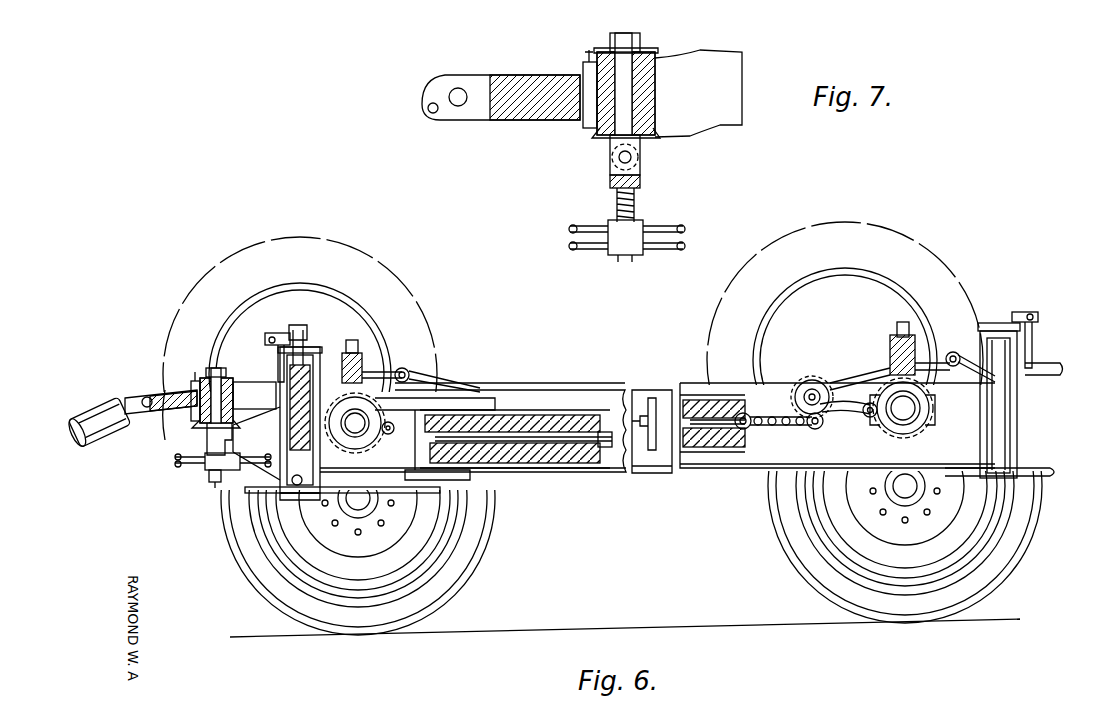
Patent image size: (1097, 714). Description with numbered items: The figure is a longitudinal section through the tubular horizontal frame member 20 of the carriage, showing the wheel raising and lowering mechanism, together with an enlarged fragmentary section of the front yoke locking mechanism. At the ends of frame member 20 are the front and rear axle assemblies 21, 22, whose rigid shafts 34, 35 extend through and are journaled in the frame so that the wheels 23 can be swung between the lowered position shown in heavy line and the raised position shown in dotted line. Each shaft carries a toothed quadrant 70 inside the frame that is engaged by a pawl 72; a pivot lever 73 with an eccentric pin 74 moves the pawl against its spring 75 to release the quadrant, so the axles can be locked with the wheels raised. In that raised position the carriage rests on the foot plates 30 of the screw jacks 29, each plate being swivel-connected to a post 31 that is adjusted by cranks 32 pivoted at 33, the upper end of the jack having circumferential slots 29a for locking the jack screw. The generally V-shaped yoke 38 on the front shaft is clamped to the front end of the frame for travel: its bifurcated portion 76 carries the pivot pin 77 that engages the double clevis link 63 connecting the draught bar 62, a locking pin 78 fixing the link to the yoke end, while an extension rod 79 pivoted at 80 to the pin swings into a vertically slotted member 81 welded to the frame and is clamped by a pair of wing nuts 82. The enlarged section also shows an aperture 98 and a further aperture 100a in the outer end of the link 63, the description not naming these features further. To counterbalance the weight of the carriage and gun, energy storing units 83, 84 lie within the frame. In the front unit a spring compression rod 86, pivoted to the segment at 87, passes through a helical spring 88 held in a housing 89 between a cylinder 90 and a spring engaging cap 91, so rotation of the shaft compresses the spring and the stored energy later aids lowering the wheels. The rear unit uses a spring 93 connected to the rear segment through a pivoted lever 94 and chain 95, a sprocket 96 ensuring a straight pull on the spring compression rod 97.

In FIG. 6, the tubular horizontal frame member 20 is at (248, 470).
In FIG. 6, the front axle assembly 21 is at (357, 440).
In FIG. 6, the rear axle assembly 22 is at (921, 428).
In FIG. 6, the wheels 23 is at (478, 554).
In FIG. 6, the screw jack 29 is at (280, 428).
In FIG. 6, the circumferential slots 29a is at (982, 322).
In FIG. 6, the ground engaging foot plate 30 is at (246, 491).
In FIG. 6, the post 31 is at (300, 509).
In FIG. 6, the cranks 32 is at (278, 360).
In FIG. 6, the crank pivot 33 is at (278, 333).
In FIG. 6, the front axle shaft 34 is at (400, 402).
In FIG. 6, the rear axle shaft 35 is at (922, 408).
In FIG. 7, the yoke 38 is at (716, 120).
In FIG. 6, the yoke 38 is at (259, 380).
In FIG. 6, the draught bar 62 is at (92, 410).
In FIG. 7, the double clevis link 63 is at (560, 75).
In FIG. 6, the double clevis link 63 is at (160, 408).
In FIG. 6, the toothed quadrant 70 is at (350, 451).
In FIG. 6, the pawl 72 is at (375, 370).
In FIG. 6, the pivot lever 73 is at (405, 368).
In FIG. 6, the eccentric pin 74 is at (345, 365).
In FIG. 6, the spring 75 is at (354, 348).
In FIG. 7, the bifurcated portion 76 is at (603, 135).
In FIG. 6, the bifurcated portion 76 is at (204, 378).
In FIG. 7, the link-connecting pivot pin 77 is at (628, 60).
In FIG. 6, the link-connecting pivot pin 77 is at (221, 372).
In FIG. 7, the locking pin 78 is at (588, 112).
In FIG. 6, the locking pin 78 is at (193, 393).
In FIG. 7, the extension rod 79 is at (640, 196).
In FIG. 6, the extension rod 79 is at (210, 478).
In FIG. 7, the rod pivot 80 is at (632, 157).
In FIG. 6, the vertically slotted member 81 is at (207, 441).
In FIG. 7, the wing nuts 82 is at (570, 226).
In FIG. 6, the wing nuts 82 is at (205, 460).
In FIG. 6, the front wheel energy storing unit 83 is at (568, 470).
In FIG. 6, the rear energy storing unit 84 is at (702, 454).
In FIG. 6, the spring compression rod 86 is at (522, 436).
In FIG. 6, the rod pivot connection 87 is at (387, 436).
In FIG. 6, the helical spring 88 is at (562, 423).
In FIG. 6, the housing 89 is at (532, 463).
In FIG. 6, the cylinder 90 is at (423, 482).
In FIG. 6, the spring engaging cap 91 is at (612, 432).
In FIG. 6, the spring 93 is at (712, 392).
In FIG. 6, the pivoted lever 94 is at (838, 426).
In FIG. 6, the chain 95 is at (796, 427).
In FIG. 6, the sprocket 96 is at (812, 388).
In FIG. 6, the spring compression rod 97 is at (723, 412).
In FIG. 7, the hole 98 is at (460, 88).
In FIG. 6, the hole 98 is at (147, 396).
In FIG. 7, the pin hole 100a is at (433, 103).